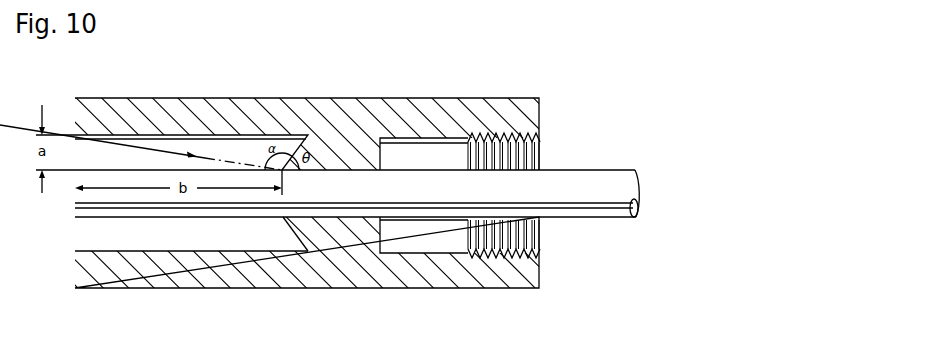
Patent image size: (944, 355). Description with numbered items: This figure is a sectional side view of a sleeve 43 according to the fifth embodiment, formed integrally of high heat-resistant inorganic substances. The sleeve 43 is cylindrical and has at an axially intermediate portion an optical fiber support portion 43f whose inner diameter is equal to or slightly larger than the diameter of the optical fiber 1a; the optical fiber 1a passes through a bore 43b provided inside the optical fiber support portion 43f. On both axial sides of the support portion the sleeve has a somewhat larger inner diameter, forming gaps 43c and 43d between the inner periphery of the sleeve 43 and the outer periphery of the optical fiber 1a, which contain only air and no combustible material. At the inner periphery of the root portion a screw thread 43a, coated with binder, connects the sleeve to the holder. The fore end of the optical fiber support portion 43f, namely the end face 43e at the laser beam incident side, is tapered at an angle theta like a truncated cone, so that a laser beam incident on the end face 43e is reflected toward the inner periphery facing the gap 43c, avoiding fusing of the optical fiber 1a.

The sleeve 43 is at (329, 86).
The screw thread 43a is at (513, 148).
The bore 43b is at (325, 217).
The gap 43c is at (135, 240).
The gap 43d is at (457, 240).
The end face 43e is at (290, 223).
The optical fiber support portion 43f is at (360, 148).
The optical fiber 1a is at (592, 187).